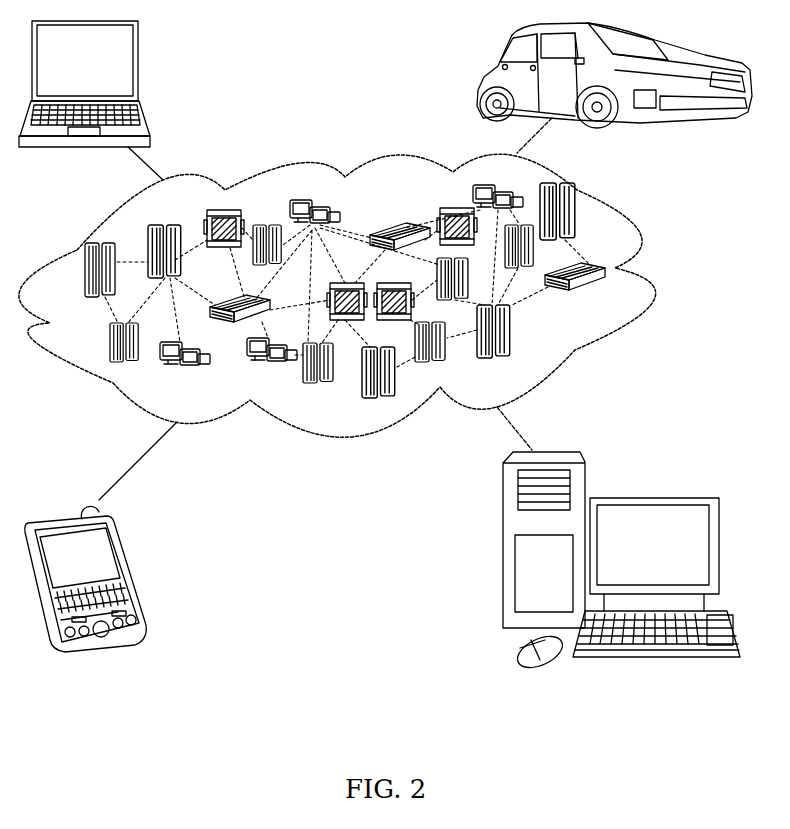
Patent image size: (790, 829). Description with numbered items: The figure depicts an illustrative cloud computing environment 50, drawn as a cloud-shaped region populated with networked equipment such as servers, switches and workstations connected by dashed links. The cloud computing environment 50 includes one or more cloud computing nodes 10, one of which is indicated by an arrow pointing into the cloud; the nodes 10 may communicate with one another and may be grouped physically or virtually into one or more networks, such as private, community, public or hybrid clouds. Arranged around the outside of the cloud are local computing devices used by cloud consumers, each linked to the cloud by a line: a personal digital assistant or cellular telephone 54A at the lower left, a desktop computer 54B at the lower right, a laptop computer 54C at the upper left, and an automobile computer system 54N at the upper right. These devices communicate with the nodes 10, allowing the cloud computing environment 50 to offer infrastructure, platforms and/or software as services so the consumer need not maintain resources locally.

The cloud computing node 10 is at (607, 302).
The cloud computing environment 50 is at (652, 277).
The personal digital assistant or cellular telephone 54A is at (135, 566).
The desktop computer 54B is at (651, 498).
The laptop computer 54C is at (140, 68).
The automobile computer system 54N is at (483, 80).